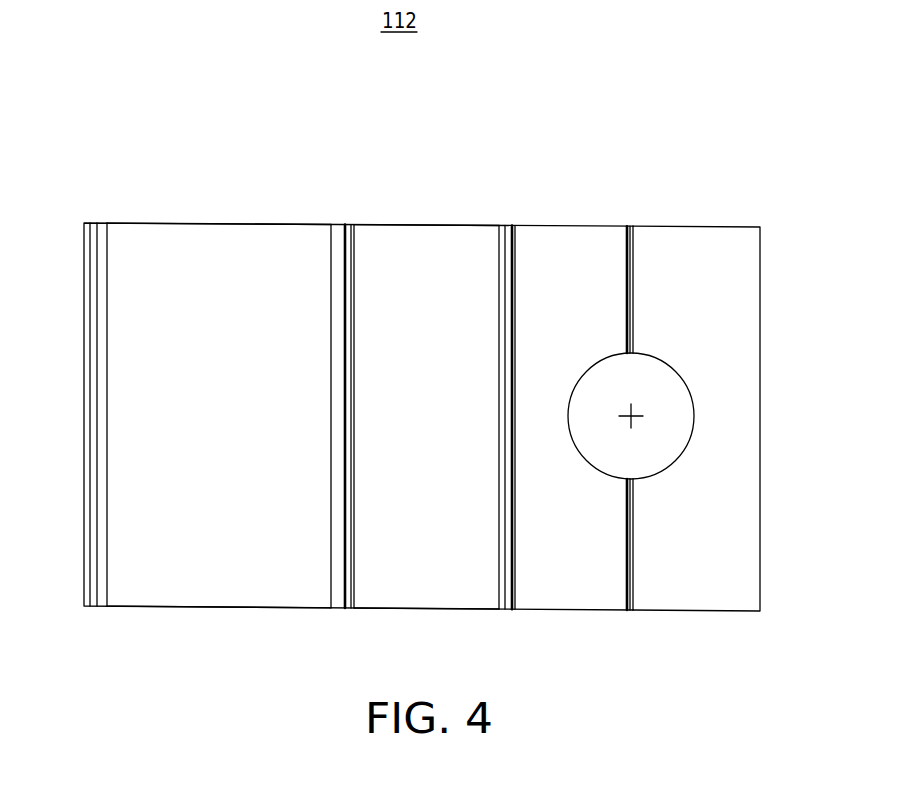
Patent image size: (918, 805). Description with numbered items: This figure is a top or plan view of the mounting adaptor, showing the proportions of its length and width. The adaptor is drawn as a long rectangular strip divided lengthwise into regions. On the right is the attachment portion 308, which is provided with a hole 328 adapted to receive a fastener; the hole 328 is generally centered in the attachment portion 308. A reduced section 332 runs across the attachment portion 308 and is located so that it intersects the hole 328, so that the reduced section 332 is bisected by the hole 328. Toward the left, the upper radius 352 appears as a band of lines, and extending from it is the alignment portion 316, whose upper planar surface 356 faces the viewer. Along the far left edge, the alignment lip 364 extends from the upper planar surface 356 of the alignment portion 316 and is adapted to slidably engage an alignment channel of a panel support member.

The alignment portion 316 is at (180, 172).
The attachment portion 308 is at (717, 186).
The alignment lip 364 is at (97, 223).
The upper planar surface 356 is at (250, 243).
The upper radius 352 is at (422, 243).
The reduced section 332 is at (632, 226).
The hole 328 is at (694, 410).